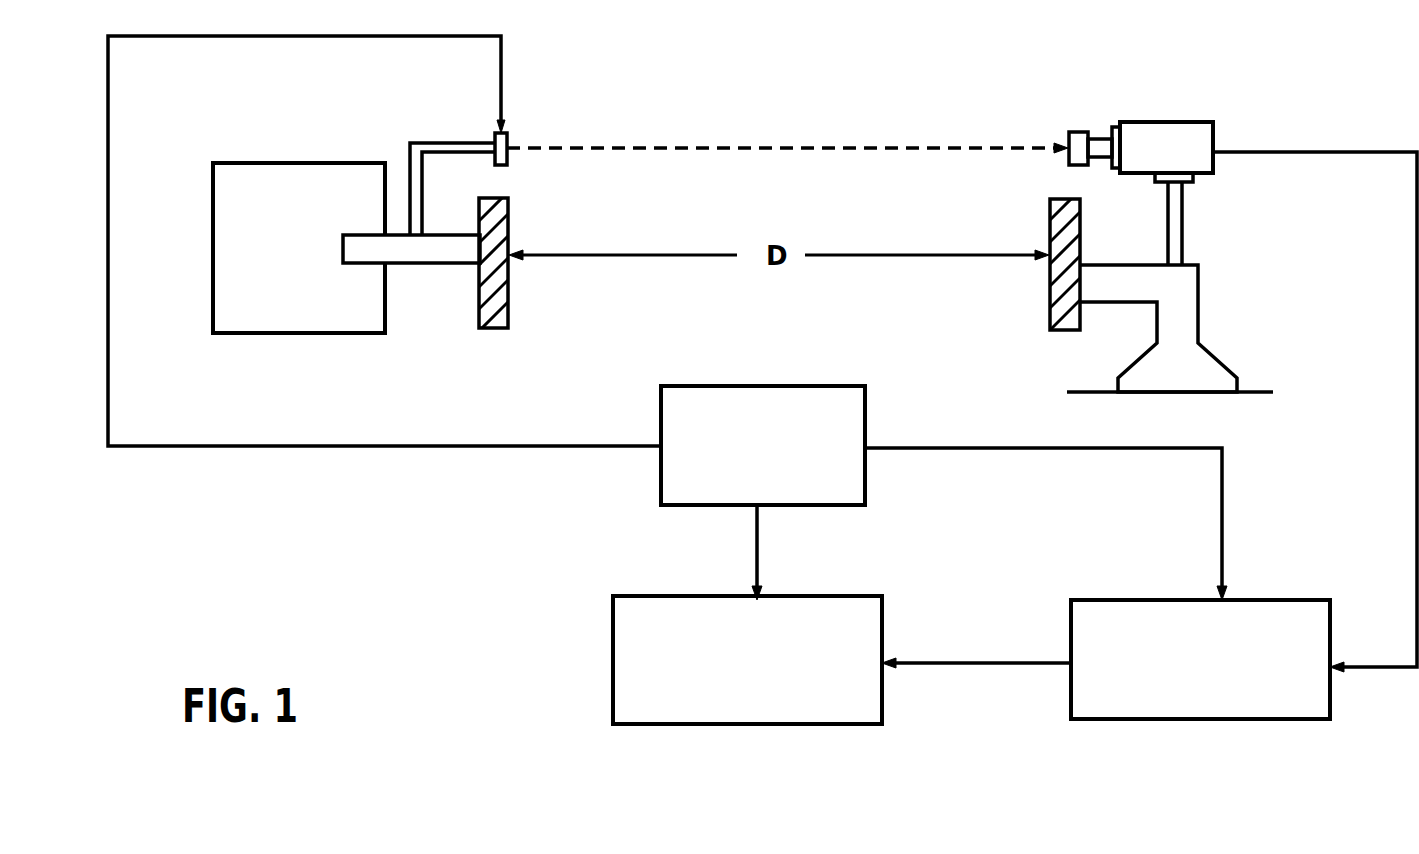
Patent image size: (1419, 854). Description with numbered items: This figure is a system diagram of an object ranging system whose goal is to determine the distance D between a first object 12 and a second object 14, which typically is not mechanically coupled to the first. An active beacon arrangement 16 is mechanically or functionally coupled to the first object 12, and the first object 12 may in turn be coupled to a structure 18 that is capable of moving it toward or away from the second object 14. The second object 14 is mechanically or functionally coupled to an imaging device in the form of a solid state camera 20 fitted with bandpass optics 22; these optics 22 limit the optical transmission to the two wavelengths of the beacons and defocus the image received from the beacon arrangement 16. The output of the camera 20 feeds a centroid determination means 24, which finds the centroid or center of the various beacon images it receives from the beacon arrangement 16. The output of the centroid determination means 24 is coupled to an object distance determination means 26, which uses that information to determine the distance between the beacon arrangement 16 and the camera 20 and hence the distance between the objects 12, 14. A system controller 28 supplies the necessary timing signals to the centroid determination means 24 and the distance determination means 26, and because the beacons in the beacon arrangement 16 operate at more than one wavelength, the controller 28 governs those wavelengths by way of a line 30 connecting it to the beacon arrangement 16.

The first object 12 is at (509, 302).
The second object 14 is at (1046, 308).
The active beacon arrangement 16 is at (495, 133).
The structure 18 is at (250, 334).
The solid state camera 20 is at (1213, 168).
The bandpass optics 22 is at (1075, 166).
The centroid determination means 24 is at (1203, 720).
The object distance determination means 26 is at (748, 725).
The system controller 28 is at (661, 430).
The line 30 is at (337, 447).